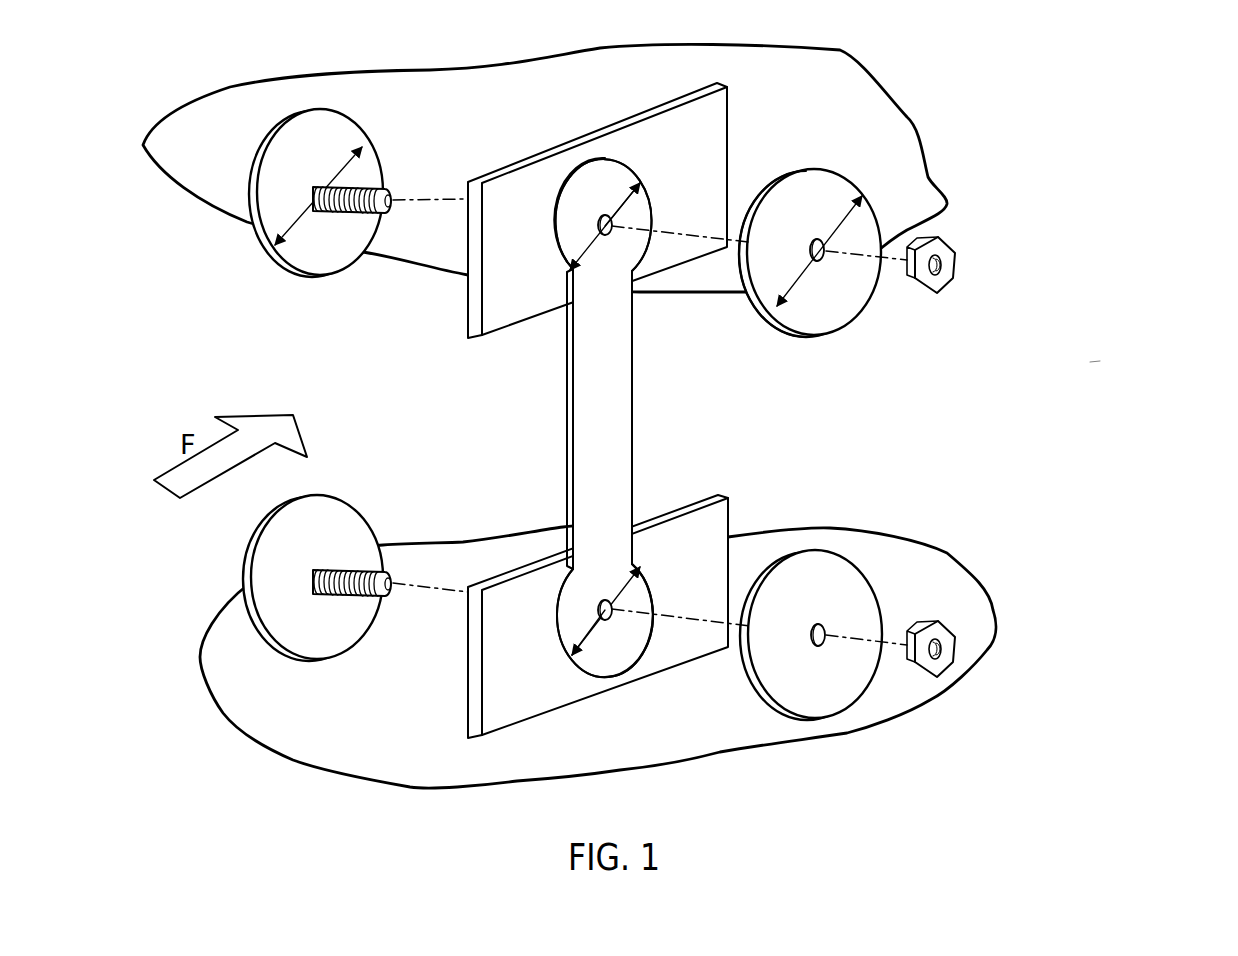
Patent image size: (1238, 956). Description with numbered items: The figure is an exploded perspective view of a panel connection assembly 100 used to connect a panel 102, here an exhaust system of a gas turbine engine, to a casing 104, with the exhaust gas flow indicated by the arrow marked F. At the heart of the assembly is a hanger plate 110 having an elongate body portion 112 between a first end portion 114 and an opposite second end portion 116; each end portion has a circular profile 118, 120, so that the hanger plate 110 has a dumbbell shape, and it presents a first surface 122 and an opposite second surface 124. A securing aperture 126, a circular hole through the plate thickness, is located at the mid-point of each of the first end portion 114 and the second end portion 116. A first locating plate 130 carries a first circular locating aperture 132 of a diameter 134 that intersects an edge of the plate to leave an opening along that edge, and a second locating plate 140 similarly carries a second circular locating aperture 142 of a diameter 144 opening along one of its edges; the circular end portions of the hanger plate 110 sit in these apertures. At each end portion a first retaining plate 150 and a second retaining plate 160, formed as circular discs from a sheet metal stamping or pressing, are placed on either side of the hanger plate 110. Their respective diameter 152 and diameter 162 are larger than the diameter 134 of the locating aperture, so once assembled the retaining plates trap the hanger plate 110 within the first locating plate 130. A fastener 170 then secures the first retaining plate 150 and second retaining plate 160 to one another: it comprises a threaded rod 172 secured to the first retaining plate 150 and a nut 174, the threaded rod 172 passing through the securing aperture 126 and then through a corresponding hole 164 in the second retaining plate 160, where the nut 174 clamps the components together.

The panel connection assembly 100 is at (1090, 363).
The panel 102 is at (975, 595).
The casing 104 is at (908, 140).
The hanger plate 110 is at (628, 412).
The elongate body portion 112 is at (628, 378).
The first end portion 114 is at (568, 250).
The second end portion 116 is at (603, 667).
The circular profile 118 is at (620, 158).
The circular profile 120 is at (630, 667).
The first surface 122 is at (623, 347).
The second surface 124 is at (565, 393).
The securing aperture 126 is at (603, 213).
The first locating plate 130 is at (720, 110).
The first circular locating aperture 132 is at (647, 193).
The diameter 134 is at (627, 203).
The second locating plate 140 is at (720, 512).
The second circular locating aperture 142 is at (642, 565).
The diameter 144 is at (577, 635).
The first retaining plate 150 is at (292, 128).
The diameter 152 is at (335, 178).
The second retaining plate 160 is at (848, 318).
The diameter 162 is at (792, 285).
The hole 164 is at (830, 243).
The fastener 170 is at (388, 193).
The threaded rod 172 is at (353, 213).
The nut 174 is at (945, 285).